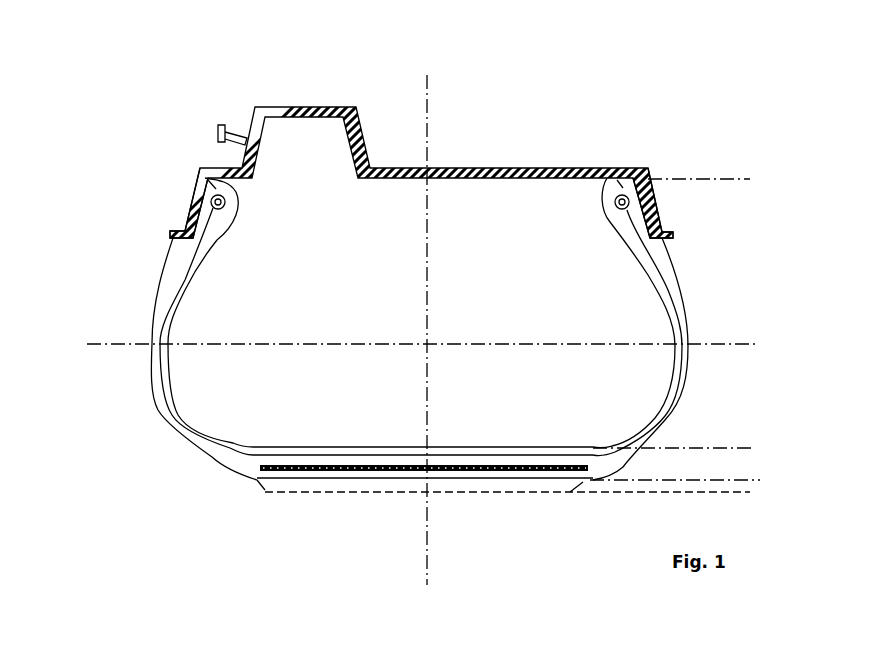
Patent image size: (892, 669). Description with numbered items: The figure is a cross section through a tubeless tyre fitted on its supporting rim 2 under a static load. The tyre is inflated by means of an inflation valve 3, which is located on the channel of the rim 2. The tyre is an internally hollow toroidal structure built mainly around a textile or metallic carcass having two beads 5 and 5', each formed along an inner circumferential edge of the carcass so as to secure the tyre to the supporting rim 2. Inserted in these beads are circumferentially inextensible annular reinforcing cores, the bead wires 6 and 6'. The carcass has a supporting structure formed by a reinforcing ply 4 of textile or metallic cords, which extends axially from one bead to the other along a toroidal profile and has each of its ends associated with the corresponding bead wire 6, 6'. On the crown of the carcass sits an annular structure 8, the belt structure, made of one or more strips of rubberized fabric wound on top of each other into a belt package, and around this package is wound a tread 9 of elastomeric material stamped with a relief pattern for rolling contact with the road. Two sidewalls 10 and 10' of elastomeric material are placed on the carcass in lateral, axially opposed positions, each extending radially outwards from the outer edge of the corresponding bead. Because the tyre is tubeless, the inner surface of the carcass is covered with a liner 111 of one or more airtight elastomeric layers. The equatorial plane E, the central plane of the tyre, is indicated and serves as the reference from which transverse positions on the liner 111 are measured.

The supporting rim 2 is at (332, 108).
The inflation valve 3 is at (220, 127).
The reinforcing ply 4 is at (178, 418).
The bead 5 is at (158, 196).
The bead 5' is at (681, 176).
The bead wire 6 is at (162, 221).
The bead wire 6' is at (700, 200).
The annular structure 8 is at (260, 467).
The tread 9 is at (505, 485).
The sidewall 10 is at (140, 359).
The sidewall 10' is at (702, 359).
The liner 111 is at (370, 447).
The equatorial plane E is at (426, 562).